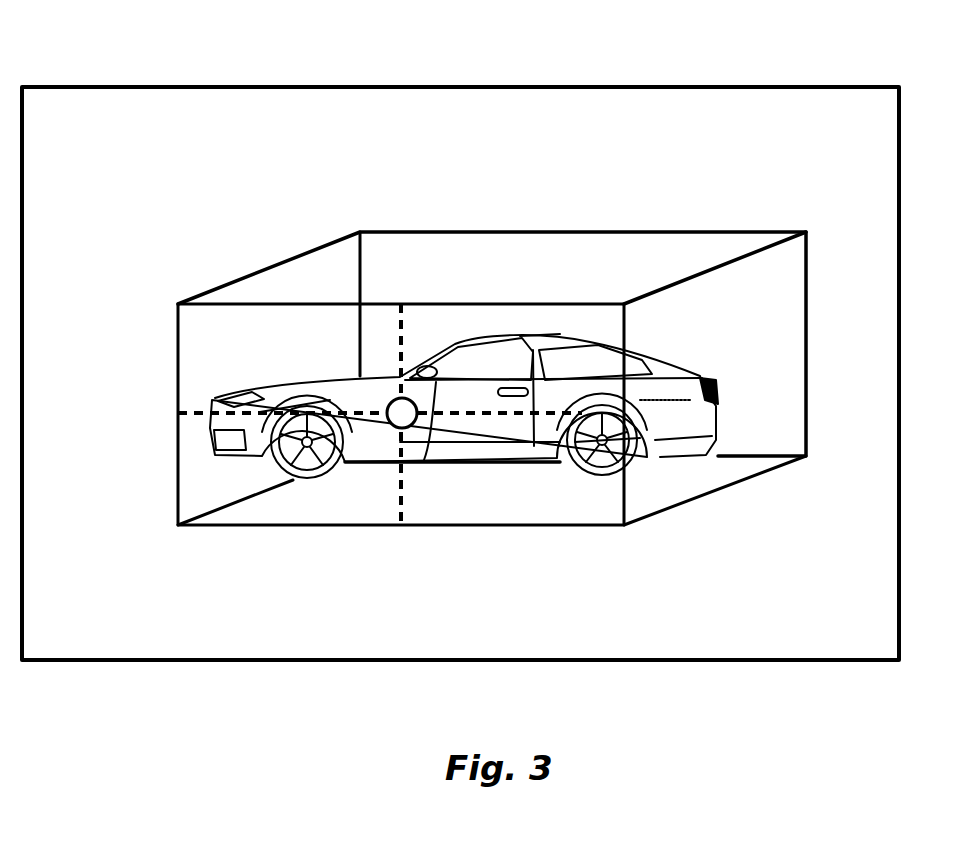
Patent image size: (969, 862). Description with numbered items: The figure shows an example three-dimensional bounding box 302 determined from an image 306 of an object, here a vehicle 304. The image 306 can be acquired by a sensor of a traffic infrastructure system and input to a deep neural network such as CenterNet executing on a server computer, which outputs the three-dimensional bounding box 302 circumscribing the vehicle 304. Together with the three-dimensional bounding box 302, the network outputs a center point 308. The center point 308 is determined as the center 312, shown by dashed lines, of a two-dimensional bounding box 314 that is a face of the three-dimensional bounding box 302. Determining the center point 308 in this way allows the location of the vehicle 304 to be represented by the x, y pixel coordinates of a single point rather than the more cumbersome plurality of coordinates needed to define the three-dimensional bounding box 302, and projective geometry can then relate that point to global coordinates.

The three-dimensional bounding box 302 is at (277, 263).
The vehicle 304 is at (222, 400).
The image 306 is at (293, 86).
The center point 308 is at (414, 400).
The center 312 is at (468, 483).
The two-dimensional bounding box 314 is at (290, 527).